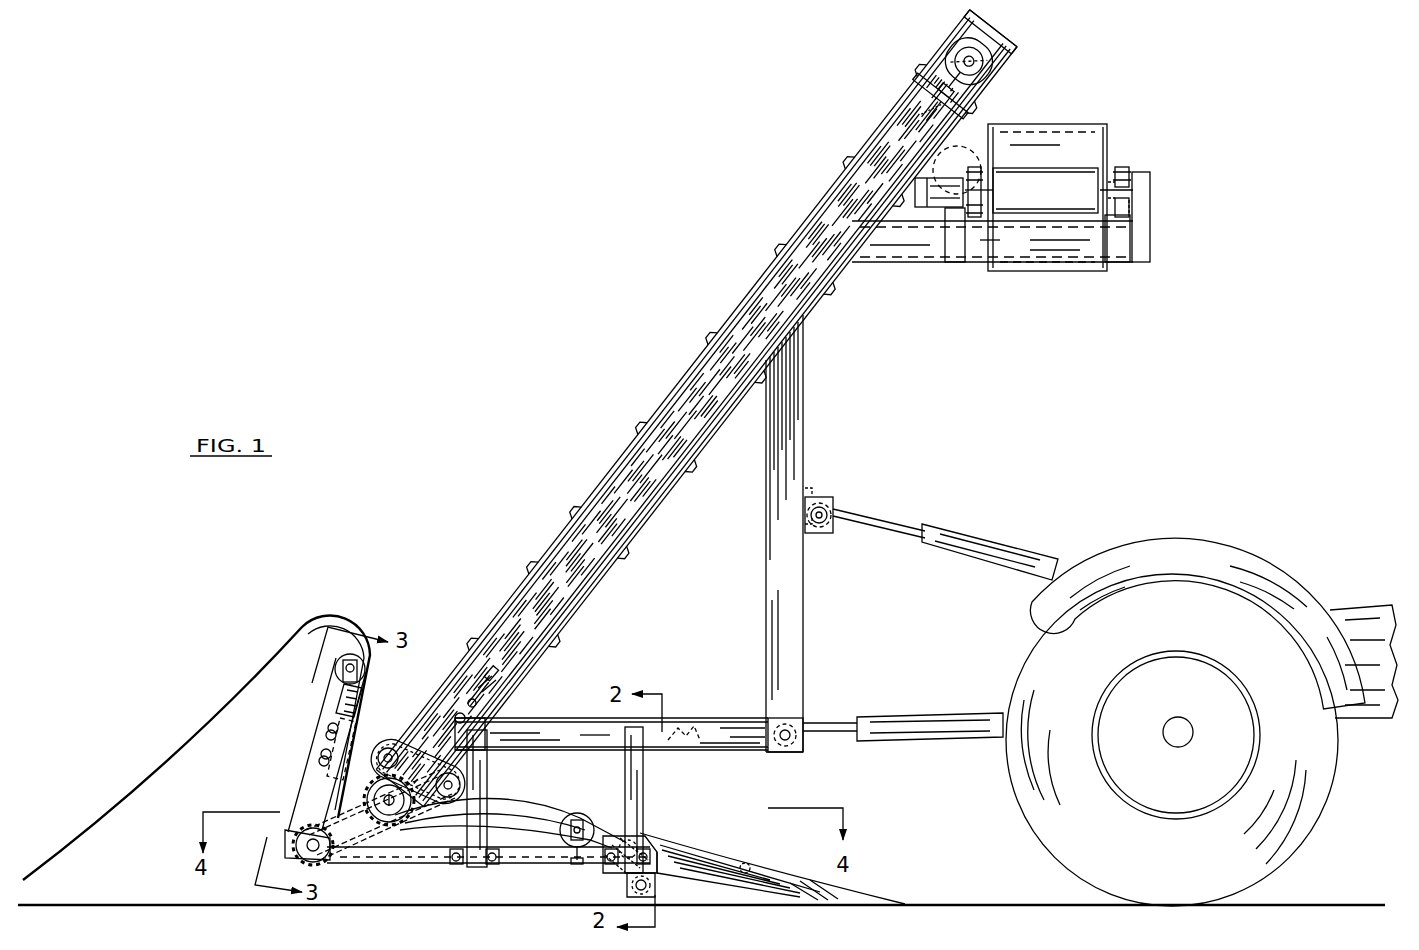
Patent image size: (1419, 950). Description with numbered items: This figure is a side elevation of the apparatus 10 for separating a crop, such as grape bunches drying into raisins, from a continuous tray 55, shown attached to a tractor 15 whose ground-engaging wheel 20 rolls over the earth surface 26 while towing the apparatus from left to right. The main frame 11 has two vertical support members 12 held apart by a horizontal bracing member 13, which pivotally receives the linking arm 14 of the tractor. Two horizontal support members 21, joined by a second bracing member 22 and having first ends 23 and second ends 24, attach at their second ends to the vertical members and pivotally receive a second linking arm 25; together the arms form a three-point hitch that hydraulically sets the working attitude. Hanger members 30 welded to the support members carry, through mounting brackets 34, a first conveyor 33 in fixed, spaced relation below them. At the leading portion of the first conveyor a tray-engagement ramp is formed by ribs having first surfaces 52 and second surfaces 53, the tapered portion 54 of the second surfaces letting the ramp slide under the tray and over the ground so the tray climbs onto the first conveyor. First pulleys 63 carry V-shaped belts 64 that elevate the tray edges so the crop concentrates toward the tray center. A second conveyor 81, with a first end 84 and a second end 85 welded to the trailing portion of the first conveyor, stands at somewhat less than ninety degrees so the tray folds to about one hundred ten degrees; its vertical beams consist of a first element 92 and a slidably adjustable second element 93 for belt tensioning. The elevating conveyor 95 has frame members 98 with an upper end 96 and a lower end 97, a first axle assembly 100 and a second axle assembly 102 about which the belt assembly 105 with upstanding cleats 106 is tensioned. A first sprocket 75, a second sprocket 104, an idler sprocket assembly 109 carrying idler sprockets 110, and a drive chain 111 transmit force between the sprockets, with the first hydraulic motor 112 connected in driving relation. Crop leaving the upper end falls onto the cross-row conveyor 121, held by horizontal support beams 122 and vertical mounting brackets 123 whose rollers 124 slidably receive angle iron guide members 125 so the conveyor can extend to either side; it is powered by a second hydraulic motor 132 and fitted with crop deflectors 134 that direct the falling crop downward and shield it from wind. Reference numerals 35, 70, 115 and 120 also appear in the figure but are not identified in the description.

The apparatus 10 is at (588, 338).
The main frame 11 is at (812, 444).
The vertical support members 12 is at (807, 397).
The horizontal bracing member 13 is at (800, 479).
The linking arm 14 is at (847, 512).
The tractor 15 is at (1106, 543).
The ground-engaging wheels 20 is at (1197, 610).
The horizontal support members 21 is at (720, 716).
The second bracing member 22 is at (680, 710).
The first ends 23 is at (500, 723).
The second ends 24 is at (785, 744).
The linking arm 25 is at (828, 726).
The earth surface 26 is at (1302, 903).
The hanger members 30 is at (481, 769).
The first conveyor 33 is at (560, 790).
The mounting bracket 34 is at (458, 864).
The lower frame member 35 is at (510, 864).
The first surfaces 52 is at (700, 857).
The second surfaces 53 is at (708, 880).
The tapered configuration 54 is at (807, 900).
The continuous tray 55 is at (323, 613).
The first pulley 63 is at (622, 834).
The V-shaped belt 64 is at (505, 814).
The roller 70 is at (575, 815).
The first sprocket 75 is at (318, 860).
The second conveyor 81 is at (305, 725).
The first end 84 is at (360, 676).
The second end 85 is at (287, 848).
The first element 92 is at (315, 745).
The second element 93 is at (336, 700).
The elevating conveyor 95 is at (657, 405).
The upper end 96 is at (980, 35).
The lower end 97 is at (357, 777).
The frame members 98 is at (705, 392).
The first axle assembly 100 is at (976, 94).
The second axle assembly 102 is at (385, 797).
The second sprocket 104 is at (384, 800).
The belt assembly 105 is at (810, 215).
The cleats 106 is at (848, 162).
The idler sprocket assembly 109 is at (423, 863).
The idler sprockets 110 is at (447, 780).
The drive chain 111 is at (328, 868).
The first hydraulic motor 112 is at (985, 50).
The flight 115 is at (577, 513).
The conveyor belt assembly 120 is at (522, 558).
The cross-row conveyor 121 is at (1118, 148).
The horizontal support beams 122 is at (922, 252).
The vertical mounting brackets 123 is at (945, 175).
The rollers 124 is at (1130, 190).
The angle iron guide members 125 is at (992, 168).
The second hydraulic motor 132 is at (932, 200).
The crop deflectors 134 is at (1078, 135).